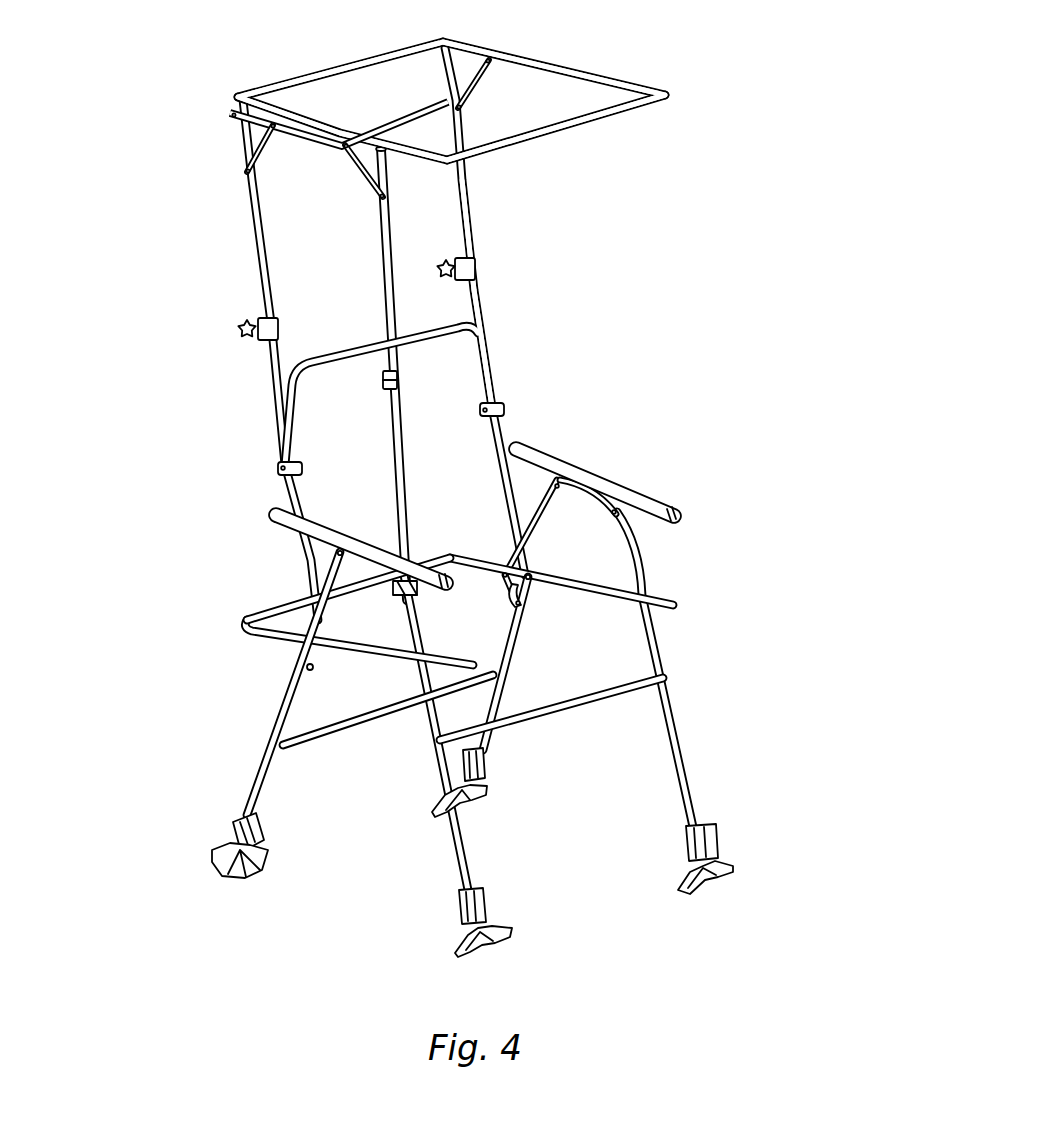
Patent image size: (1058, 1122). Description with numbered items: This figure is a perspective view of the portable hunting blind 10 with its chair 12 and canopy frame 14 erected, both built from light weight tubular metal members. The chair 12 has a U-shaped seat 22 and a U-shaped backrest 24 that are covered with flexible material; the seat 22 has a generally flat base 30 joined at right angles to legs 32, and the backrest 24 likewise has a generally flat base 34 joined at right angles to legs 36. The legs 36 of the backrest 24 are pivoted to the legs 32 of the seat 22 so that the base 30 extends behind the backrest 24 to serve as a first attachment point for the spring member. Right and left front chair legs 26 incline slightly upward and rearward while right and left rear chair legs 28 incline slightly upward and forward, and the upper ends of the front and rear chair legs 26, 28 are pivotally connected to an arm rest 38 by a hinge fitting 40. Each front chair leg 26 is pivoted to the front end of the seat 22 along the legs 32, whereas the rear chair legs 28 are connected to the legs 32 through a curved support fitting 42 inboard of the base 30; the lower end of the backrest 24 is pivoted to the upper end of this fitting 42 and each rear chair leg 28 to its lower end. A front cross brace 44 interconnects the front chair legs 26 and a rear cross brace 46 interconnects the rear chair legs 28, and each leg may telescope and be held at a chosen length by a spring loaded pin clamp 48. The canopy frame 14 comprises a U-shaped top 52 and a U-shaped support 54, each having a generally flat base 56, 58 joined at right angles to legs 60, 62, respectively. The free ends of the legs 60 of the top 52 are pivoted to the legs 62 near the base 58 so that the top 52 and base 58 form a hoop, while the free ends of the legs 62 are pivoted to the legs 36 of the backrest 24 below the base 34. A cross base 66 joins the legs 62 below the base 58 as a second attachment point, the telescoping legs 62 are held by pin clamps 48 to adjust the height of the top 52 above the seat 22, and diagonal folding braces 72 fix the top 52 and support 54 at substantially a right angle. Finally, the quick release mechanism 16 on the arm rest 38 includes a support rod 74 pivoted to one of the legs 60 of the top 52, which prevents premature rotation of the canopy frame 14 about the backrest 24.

The portable hunting blind 10 is at (480, 478).
The chair 12 is at (479, 535).
The canopy frame 14 is at (374, 300).
The quick release mechanism 16 is at (397, 600).
The U-shaped seat 22 is at (444, 631).
The U-shaped backrest 24 is at (391, 400).
The front chair legs 26 is at (688, 740).
The rear chair legs 28 is at (518, 654).
The base of U-shaped seat 30 is at (287, 600).
The legs of U-shaped seat 32 is at (571, 580).
The base of U-shaped backrest 34 is at (310, 356).
The legs of U-shaped backrest 36 is at (508, 426).
The arm rest 38 is at (628, 482).
The hinge fitting 40 is at (577, 498).
The curved support fitting 42 is at (504, 598).
The front cross brace 44 is at (527, 730).
The rear cross brace 46 is at (343, 735).
The spring loaded pin clamp 48 is at (742, 293).
The U-shaped top 52 is at (474, 88).
The U-shaped support 54 is at (349, 311).
The base of U-shaped top 56 is at (560, 133).
The base of U-shaped support 58 is at (315, 71).
The legs of U-shaped top 60 is at (622, 80).
The legs of U-shaped support 62 is at (474, 207).
The cross base 66 is at (383, 114).
The diagonal folding braces 72 is at (486, 78).
The support rod 74 is at (406, 446).